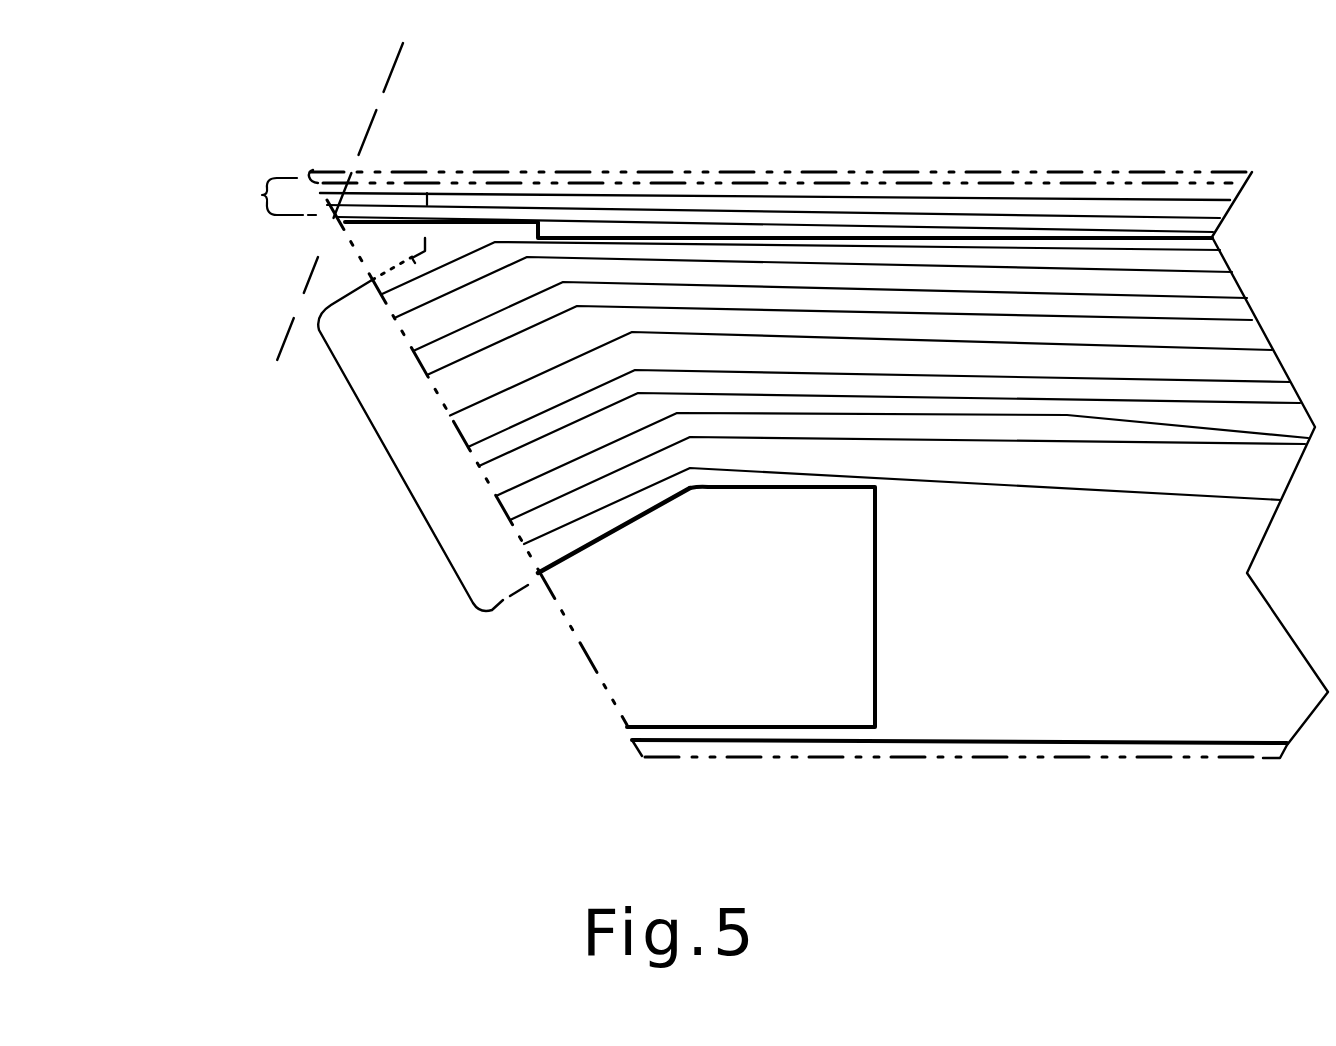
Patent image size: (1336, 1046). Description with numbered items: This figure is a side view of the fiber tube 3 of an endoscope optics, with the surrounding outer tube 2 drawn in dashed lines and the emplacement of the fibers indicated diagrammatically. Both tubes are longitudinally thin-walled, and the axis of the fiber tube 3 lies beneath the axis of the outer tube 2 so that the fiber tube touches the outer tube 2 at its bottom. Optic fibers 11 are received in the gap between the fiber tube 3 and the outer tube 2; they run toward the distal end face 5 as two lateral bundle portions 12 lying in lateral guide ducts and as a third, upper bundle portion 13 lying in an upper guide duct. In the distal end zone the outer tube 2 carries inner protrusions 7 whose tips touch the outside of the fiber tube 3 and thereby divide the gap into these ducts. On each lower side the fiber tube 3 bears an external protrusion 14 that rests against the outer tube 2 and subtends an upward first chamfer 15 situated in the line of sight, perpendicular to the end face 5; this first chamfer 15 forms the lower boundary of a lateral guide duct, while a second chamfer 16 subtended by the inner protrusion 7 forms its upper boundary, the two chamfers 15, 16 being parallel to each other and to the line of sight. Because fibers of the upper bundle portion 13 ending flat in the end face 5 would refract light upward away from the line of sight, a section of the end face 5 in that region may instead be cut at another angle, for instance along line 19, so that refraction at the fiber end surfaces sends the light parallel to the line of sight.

The outer tube 2 is at (1037, 180).
The fiber tube 3 is at (1237, 717).
The end face 5 is at (598, 684).
The inner protrusion 7 is at (428, 228).
The optic fibers 11 is at (780, 206).
The lateral bundle portion 12 is at (343, 395).
The upper bundle portion 13 is at (262, 195).
The external protrusion 14 is at (732, 665).
The first chamfer 15 is at (625, 525).
The second chamfer 16 is at (415, 263).
The line 19 is at (305, 283).